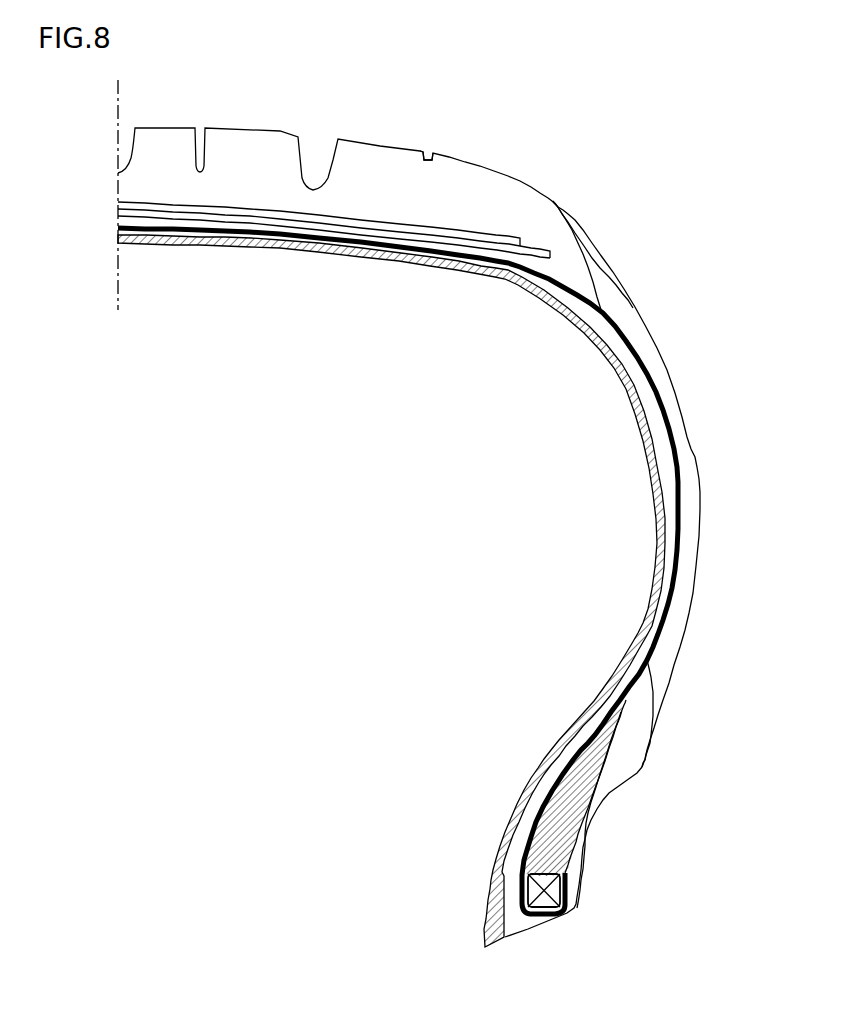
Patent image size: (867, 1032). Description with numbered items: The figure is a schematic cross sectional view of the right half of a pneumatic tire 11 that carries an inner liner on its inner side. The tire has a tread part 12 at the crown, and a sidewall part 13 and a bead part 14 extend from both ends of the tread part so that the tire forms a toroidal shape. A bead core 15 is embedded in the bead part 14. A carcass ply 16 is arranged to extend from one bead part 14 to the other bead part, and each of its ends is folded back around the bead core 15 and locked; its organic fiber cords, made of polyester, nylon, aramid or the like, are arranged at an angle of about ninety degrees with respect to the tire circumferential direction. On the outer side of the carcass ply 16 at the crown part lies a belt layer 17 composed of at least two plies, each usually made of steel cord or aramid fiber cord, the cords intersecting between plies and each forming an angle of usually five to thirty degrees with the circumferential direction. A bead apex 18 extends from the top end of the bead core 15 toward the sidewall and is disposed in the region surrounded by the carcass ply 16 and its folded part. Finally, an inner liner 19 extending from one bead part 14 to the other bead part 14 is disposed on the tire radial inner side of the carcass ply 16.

The pneumatic tire 11 is at (247, 122).
The tread part 12 is at (397, 148).
The sidewall part 13 is at (698, 467).
The bead part 14 is at (623, 782).
The bead core 15 is at (543, 905).
The carcass ply 16 is at (667, 623).
The belt layer 17 is at (117, 201).
The bead apex 18 is at (560, 830).
The inner liner 19 is at (630, 653).